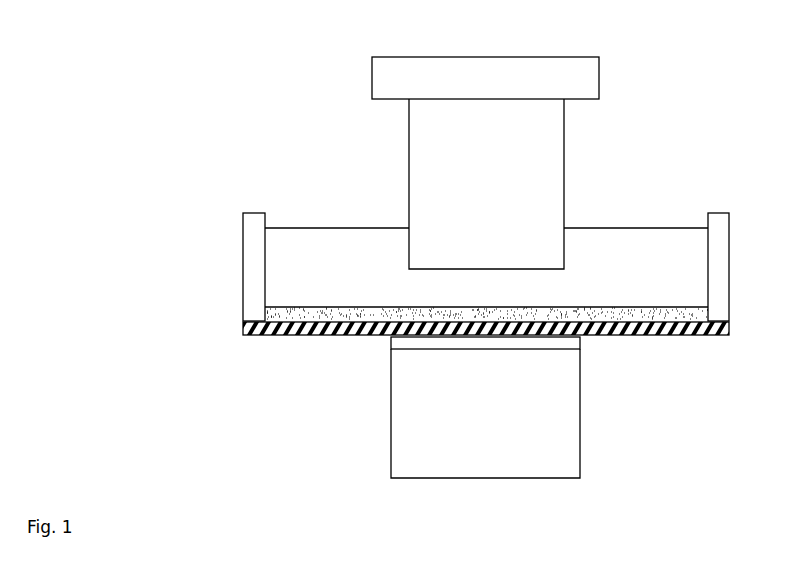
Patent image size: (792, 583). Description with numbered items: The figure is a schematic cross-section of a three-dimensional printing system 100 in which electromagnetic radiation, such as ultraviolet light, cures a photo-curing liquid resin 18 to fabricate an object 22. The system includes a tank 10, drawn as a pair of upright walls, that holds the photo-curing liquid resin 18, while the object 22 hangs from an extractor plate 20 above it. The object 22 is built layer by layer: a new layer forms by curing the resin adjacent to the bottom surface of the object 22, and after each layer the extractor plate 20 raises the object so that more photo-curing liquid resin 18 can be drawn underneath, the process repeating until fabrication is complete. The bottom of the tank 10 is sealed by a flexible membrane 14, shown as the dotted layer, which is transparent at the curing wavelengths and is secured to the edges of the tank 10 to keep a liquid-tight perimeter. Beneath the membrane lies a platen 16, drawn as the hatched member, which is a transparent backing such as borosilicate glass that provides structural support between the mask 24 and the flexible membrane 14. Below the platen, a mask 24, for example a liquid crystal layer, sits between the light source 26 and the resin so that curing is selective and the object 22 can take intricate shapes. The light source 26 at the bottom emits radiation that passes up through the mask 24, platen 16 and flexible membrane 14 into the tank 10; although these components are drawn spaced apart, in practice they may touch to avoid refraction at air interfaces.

The 3D printing system 100 is at (211, 64).
The tank 10 is at (250, 228).
The flexible membrane 14 is at (268, 311).
The platen 16 is at (298, 338).
The photo-curing liquid resin 18 is at (674, 268).
The extractor plate 20 is at (496, 90).
The object 22 is at (497, 196).
The mask 24 is at (403, 343).
The light source 26 is at (496, 425).